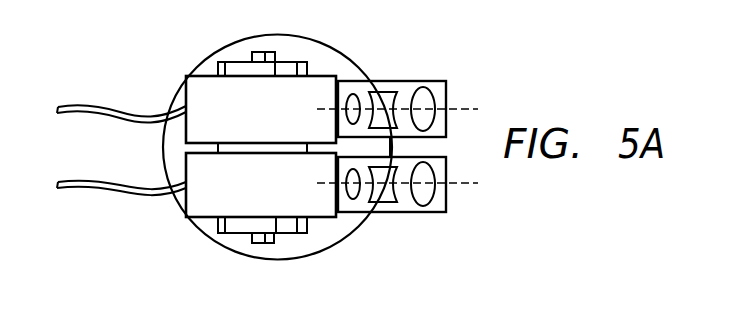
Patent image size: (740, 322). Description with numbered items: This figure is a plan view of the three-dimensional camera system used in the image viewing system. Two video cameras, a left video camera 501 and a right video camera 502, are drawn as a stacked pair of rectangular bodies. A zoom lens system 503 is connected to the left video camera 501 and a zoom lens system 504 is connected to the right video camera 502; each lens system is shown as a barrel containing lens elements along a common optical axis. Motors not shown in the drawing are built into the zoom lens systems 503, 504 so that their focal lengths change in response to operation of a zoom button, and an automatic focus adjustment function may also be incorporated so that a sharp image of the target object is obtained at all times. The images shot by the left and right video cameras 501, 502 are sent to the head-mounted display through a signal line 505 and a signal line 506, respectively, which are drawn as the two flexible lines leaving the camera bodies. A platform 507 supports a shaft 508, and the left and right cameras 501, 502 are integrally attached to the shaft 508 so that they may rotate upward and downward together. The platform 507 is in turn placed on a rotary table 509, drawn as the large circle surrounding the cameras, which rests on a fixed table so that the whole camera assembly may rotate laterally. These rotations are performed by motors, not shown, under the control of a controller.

The left video camera 501 is at (192, 219).
The right video camera 502 is at (203, 75).
The zoom lens system 503 is at (408, 213).
The zoom lens system 504 is at (408, 80).
The signal line 505 is at (82, 180).
The signal line 506 is at (80, 102).
The platform 507 is at (237, 235).
The shaft 508 is at (266, 244).
The rotary table 509 is at (328, 44).